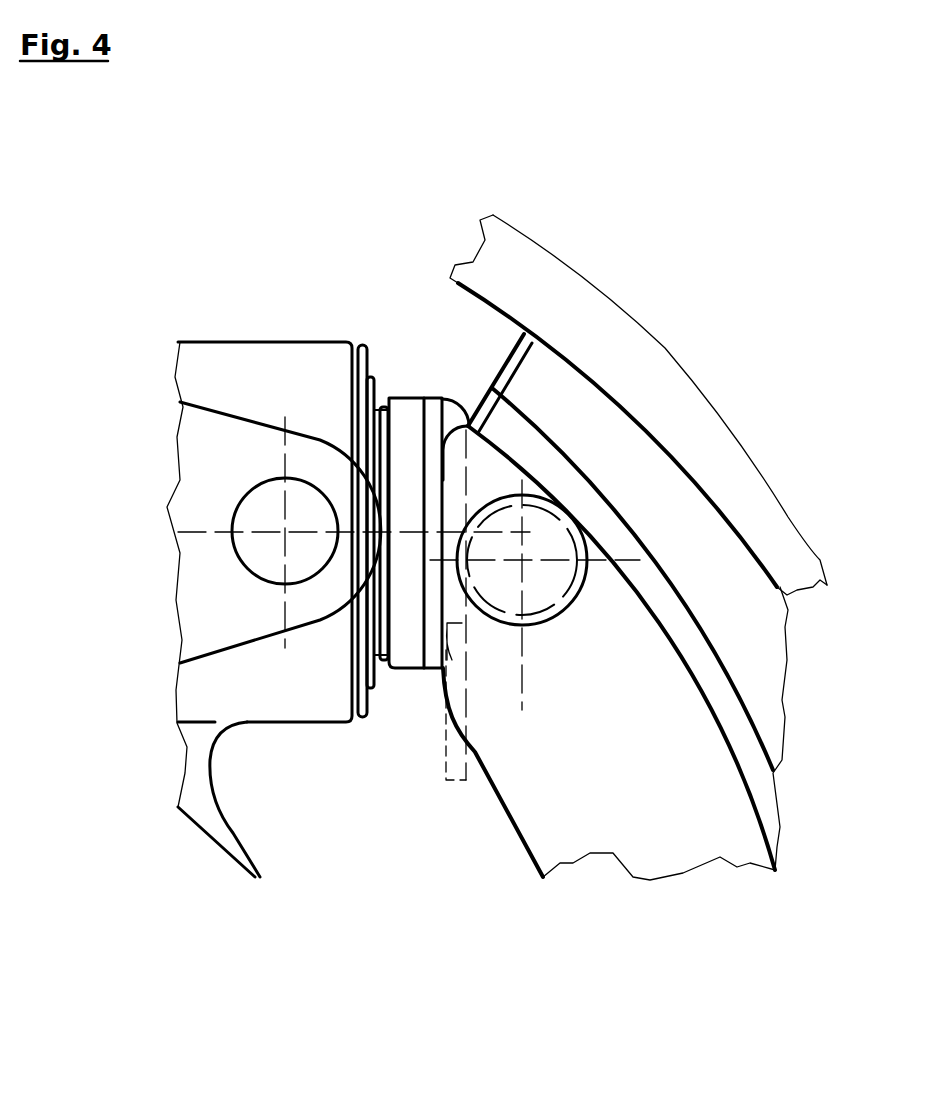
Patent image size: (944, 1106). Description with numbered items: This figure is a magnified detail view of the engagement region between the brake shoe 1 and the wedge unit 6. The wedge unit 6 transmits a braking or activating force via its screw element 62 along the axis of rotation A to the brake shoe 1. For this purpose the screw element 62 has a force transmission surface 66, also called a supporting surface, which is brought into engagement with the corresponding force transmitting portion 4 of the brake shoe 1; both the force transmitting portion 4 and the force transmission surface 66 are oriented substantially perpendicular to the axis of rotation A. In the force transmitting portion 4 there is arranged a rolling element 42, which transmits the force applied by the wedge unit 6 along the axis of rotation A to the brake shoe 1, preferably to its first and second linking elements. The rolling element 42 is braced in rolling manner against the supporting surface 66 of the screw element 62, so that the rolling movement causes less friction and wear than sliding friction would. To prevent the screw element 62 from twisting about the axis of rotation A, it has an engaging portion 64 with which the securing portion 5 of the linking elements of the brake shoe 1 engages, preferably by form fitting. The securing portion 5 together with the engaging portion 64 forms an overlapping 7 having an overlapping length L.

The brake shoe 1 is at (753, 870).
The force transmitting portion 4 is at (592, 608).
The rolling element 42 is at (583, 590).
The securing portion 5 is at (465, 545).
The wedge unit 6 is at (235, 336).
The screw element 62 is at (412, 398).
The engaging portion 64 is at (441, 398).
The force transmission surface 66 is at (572, 430).
The overlapping 7 is at (455, 787).
The axis of rotation A is at (467, 478).
The overlapping length L is at (443, 668).